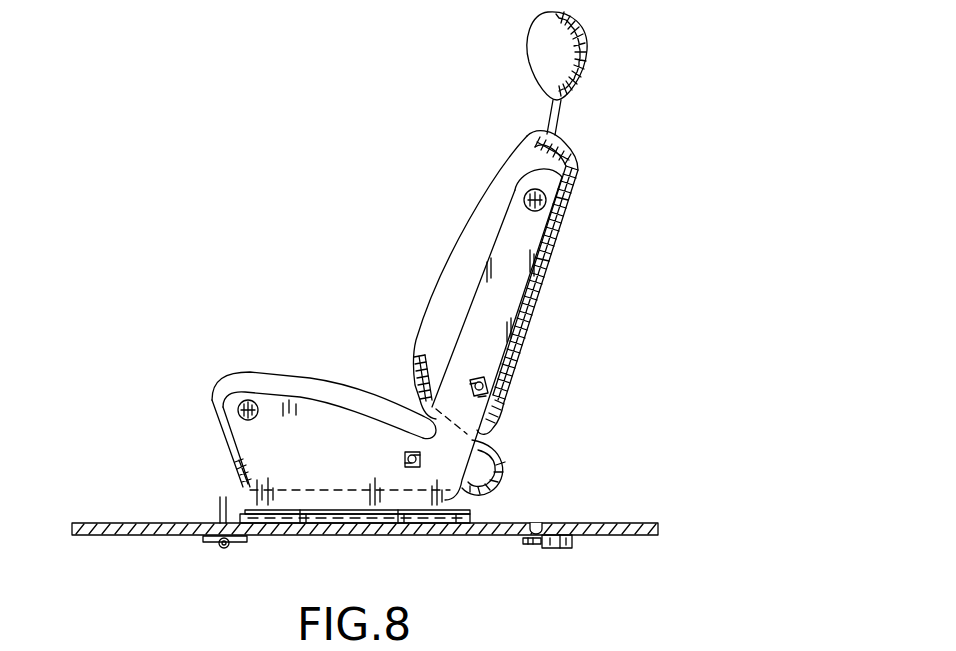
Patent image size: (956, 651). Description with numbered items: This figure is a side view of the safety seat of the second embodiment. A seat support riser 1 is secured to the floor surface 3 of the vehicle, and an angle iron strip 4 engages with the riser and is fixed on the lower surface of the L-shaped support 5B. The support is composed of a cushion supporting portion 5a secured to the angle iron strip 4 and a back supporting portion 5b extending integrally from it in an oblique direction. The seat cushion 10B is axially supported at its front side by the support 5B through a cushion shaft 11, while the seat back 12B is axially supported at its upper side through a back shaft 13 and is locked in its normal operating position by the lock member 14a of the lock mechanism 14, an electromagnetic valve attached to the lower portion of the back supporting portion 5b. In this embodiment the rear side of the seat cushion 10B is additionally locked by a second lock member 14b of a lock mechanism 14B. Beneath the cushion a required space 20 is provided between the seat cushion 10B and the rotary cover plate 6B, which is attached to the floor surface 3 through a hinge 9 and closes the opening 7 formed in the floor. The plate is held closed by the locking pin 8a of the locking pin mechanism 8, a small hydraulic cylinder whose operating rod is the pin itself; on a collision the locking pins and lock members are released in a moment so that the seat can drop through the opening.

The seat back 12B is at (575, 150).
The back shaft 13 is at (546, 200).
The back supporting portion 5b is at (514, 291).
The lock mechanism 14 is at (476, 375).
The lock member 14a is at (493, 395).
The seat cushion 10B is at (309, 373).
The cushion supporting portion 5a is at (315, 419).
The support 5B is at (383, 424).
The cushion shaft 11 is at (238, 410).
The lock mechanism 14B is at (398, 459).
The second lock member 14b is at (420, 452).
The angle iron strip 4 is at (302, 510).
The space 20 is at (445, 501).
The floor surface 3 is at (606, 525).
The opening 7 is at (536, 526).
The locking pin mechanism 8 is at (563, 555).
The locking pin 8a is at (531, 546).
The rotary cover plate 6B is at (397, 547).
The seat support riser 1 is at (240, 513).
The hinge 9 is at (224, 549).